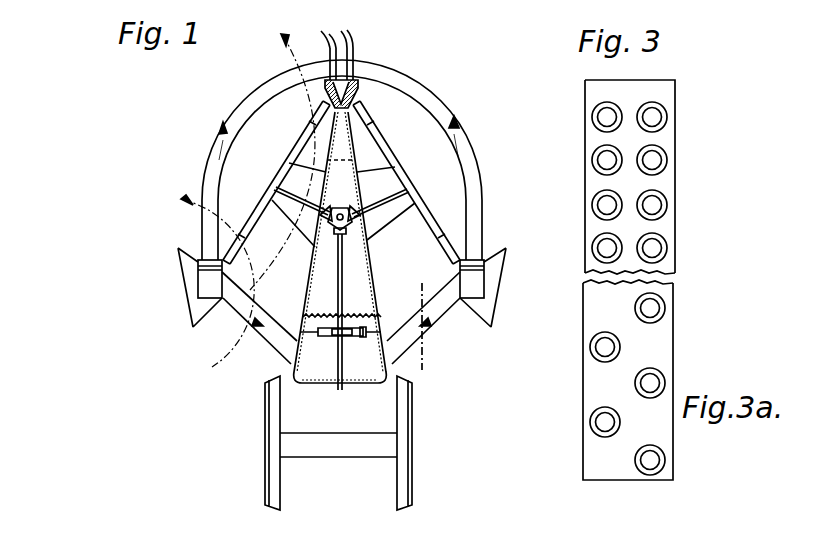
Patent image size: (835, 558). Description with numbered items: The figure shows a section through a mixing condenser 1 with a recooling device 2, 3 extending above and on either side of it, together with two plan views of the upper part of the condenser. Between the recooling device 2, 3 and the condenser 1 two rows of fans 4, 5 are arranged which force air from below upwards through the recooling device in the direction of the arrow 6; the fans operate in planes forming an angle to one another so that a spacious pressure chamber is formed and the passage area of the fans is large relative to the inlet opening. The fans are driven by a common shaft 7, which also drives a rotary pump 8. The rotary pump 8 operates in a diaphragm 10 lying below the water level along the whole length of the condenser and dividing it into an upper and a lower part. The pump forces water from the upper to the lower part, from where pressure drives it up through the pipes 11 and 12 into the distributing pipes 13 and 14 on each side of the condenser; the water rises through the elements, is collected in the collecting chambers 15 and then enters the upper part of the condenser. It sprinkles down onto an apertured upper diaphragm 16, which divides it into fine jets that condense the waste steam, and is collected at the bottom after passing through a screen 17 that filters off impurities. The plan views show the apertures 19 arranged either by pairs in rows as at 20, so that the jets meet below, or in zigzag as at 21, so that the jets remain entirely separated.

In FIG. 1, the mixing condenser 1 is at (358, 264).
In FIG. 1, the recooling device 2 is at (256, 96).
In FIG. 1, the recooling device 3 is at (418, 90).
In FIG. 1, the fan 4 is at (311, 127).
In FIG. 1, the fan 5 is at (386, 144).
In FIG. 1, the arrow 6 is at (228, 353).
In FIG. 1, the common shaft 7 is at (352, 228).
In FIG. 1, the rotary pump 8 is at (349, 338).
In FIG. 1, the diaphragm 10 is at (367, 331).
In FIG. 1, the pipe 11 is at (270, 341).
In FIG. 1, the pipe 12 is at (447, 306).
In FIG. 1, the distributing pipe 13 is at (207, 284).
In FIG. 1, the distributing pipe 14 is at (478, 294).
In FIG. 1, the collecting chamber 15 is at (328, 50).
In FIG. 1, the upper diaphragm 16 is at (341, 120).
In FIG. 1, the screen 17 is at (317, 316).
In FIG. 3, the apertures 19 is at (658, 121).
In FIG. 3, the aperture arrangement in pairs 20 is at (628, 177).
In FIG. 3A, the zigzag aperture arrangement 21 is at (590, 389).